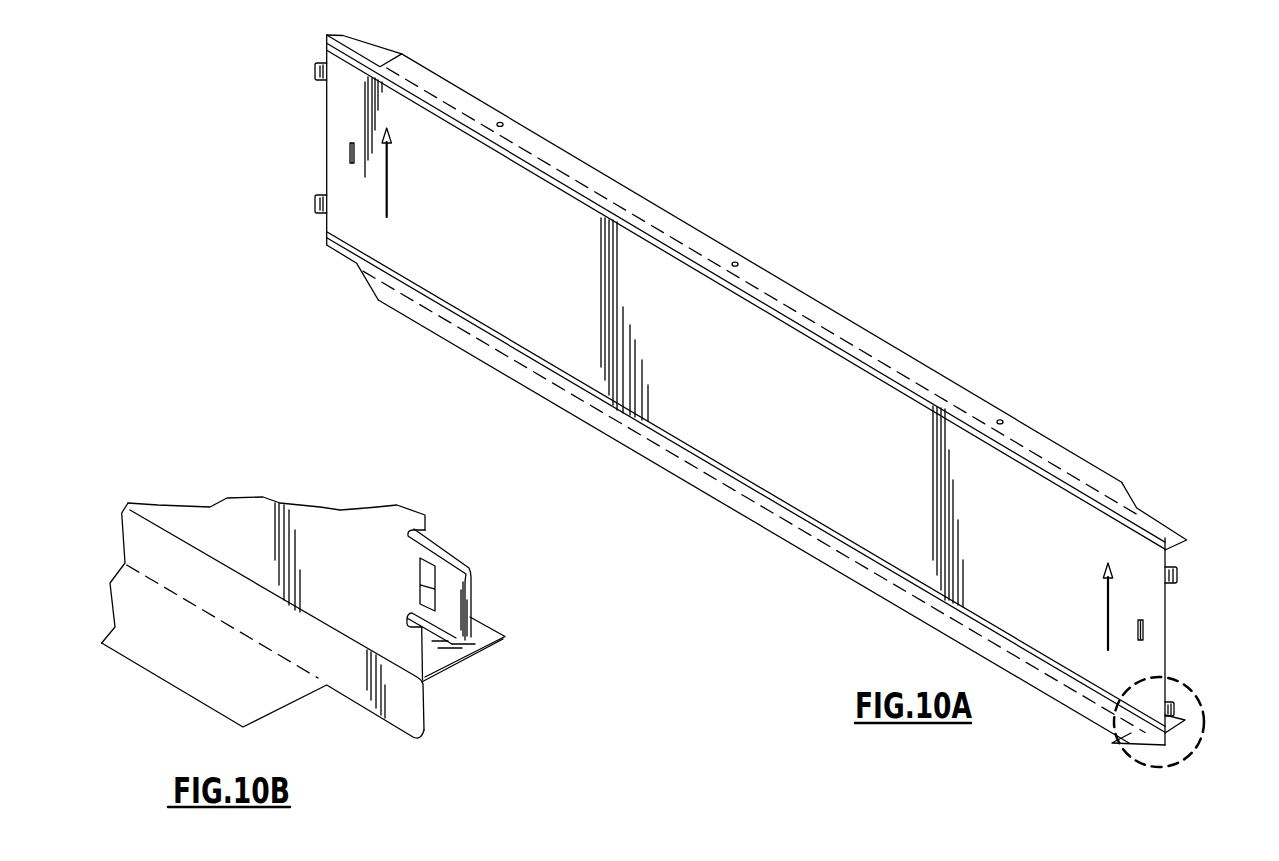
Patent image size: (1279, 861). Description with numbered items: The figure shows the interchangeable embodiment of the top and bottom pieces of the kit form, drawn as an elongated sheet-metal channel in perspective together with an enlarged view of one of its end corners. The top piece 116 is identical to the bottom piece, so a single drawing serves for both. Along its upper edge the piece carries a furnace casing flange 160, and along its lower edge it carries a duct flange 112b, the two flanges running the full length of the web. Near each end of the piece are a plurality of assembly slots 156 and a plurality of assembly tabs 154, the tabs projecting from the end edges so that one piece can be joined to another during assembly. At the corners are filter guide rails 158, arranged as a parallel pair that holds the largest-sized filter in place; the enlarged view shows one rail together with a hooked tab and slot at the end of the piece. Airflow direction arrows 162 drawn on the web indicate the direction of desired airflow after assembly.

In FIG. 10A, the top piece 116 is at (747, 399).
In FIG. 10A, the duct flange 112b is at (843, 566).
In FIG. 10B, the duct flange 112b is at (192, 670).
In FIG. 10A, the assembly tabs 154 is at (315, 71).
In FIG. 10B, the assembly tabs 154 is at (458, 597).
In FIG. 10A, the assembly slots 156 is at (350, 153).
In FIG. 10A, the filter guide rails 158 is at (1157, 520).
In FIG. 10B, the filter guide rails 158 is at (440, 653).
In FIG. 10A, the furnace casing flange 160 is at (663, 225).
In FIG. 10A, the airflow direction arrows 162 is at (390, 181).